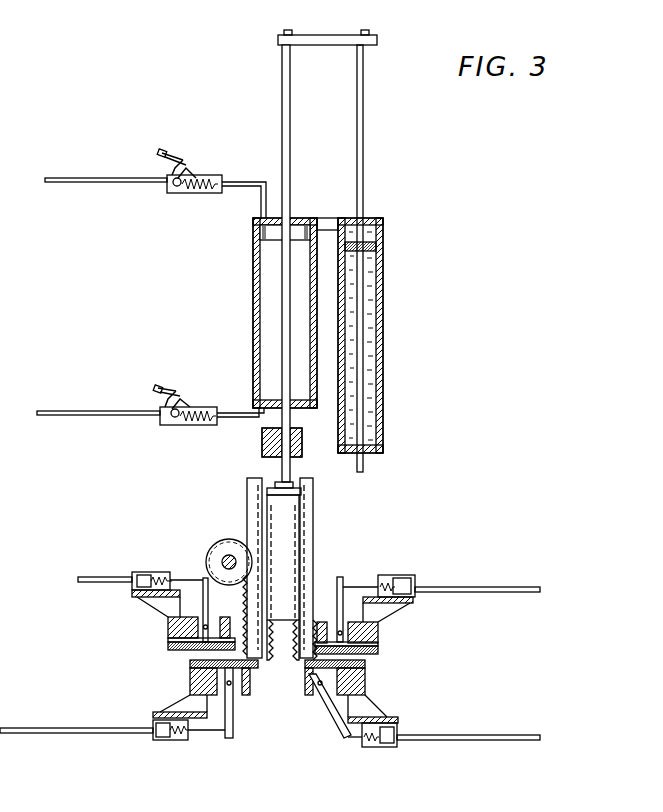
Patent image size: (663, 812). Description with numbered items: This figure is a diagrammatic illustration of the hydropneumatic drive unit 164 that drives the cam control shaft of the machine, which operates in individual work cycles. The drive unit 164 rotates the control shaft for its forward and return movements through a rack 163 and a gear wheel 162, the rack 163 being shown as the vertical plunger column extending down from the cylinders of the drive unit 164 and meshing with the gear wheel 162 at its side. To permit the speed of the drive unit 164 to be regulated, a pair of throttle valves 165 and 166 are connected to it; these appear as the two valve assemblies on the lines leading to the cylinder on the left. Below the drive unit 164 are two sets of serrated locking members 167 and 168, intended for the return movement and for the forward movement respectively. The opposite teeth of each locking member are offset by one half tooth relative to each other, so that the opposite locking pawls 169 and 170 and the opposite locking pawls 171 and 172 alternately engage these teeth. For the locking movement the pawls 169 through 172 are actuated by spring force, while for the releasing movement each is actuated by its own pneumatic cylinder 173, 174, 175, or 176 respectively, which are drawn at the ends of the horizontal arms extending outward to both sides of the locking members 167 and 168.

The gear wheel 162 is at (212, 553).
The rack 163 is at (252, 476).
The hydropneumatic drive unit 164 is at (343, 217).
The throttle valve 165 is at (190, 172).
The throttle valve 166 is at (188, 403).
The serrated locking member 167 is at (248, 518).
The serrated locking member 168 is at (297, 672).
The locking pawl 169 is at (312, 700).
The locking pawl 170 is at (237, 700).
The locking pawl 171 is at (319, 632).
The locking pawl 172 is at (236, 634).
The pneumatic cylinder 173 is at (378, 748).
The pneumatic cylinder 174 is at (162, 741).
The pneumatic cylinder 175 is at (405, 575).
The pneumatic cylinder 176 is at (142, 572).